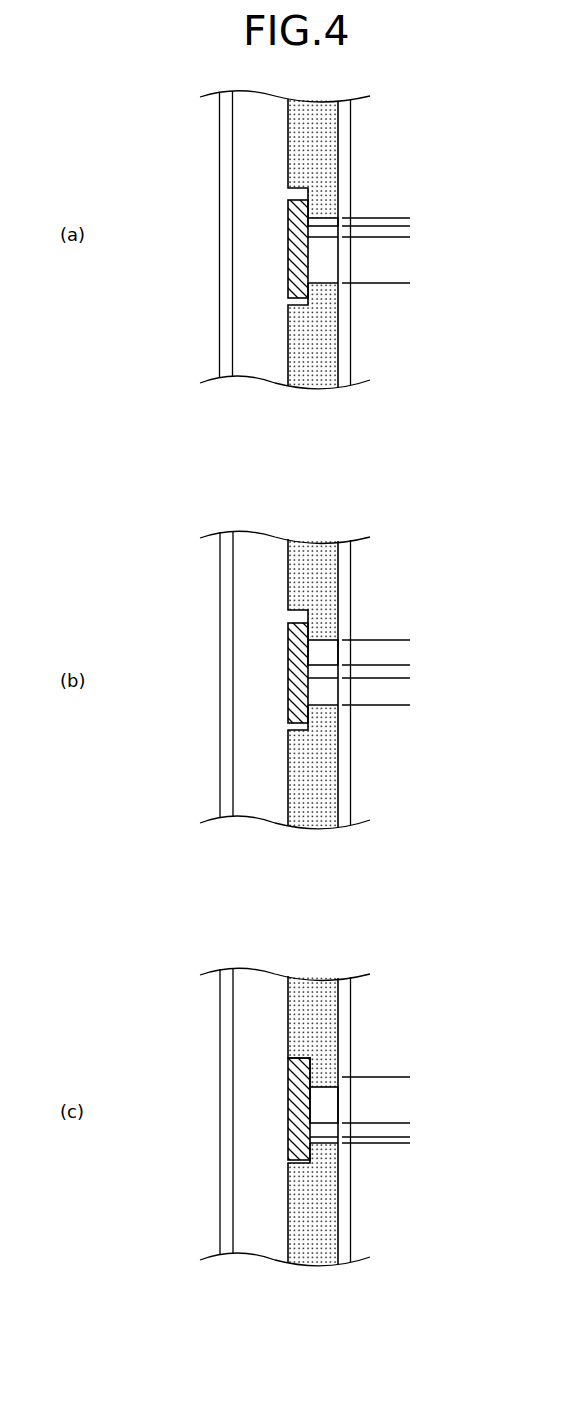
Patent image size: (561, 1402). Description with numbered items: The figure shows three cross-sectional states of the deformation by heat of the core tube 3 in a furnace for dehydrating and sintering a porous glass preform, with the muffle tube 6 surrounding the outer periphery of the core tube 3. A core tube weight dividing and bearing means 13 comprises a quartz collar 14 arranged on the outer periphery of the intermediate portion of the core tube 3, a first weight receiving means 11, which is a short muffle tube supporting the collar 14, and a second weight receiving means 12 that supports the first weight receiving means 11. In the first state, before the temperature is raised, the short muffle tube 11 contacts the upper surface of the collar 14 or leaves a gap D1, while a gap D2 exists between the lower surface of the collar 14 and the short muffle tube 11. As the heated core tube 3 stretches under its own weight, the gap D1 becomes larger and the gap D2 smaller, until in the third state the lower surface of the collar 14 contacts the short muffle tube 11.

The core tube 3 is at (351, 337).
The muffle tube 6 is at (219, 157).
The first weight receiving means 11 is at (330, 128).
The second weight receiving means 12 is at (298, 186).
The core tube weight dividing and bearing means 13 is at (417, 100).
The collar 14 is at (318, 226).
The gap D1 is at (405, 206).
The gap D2 is at (405, 237).